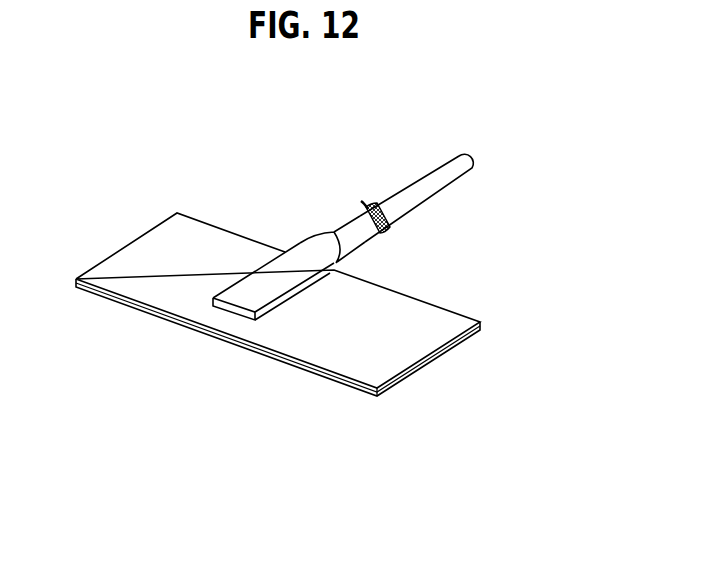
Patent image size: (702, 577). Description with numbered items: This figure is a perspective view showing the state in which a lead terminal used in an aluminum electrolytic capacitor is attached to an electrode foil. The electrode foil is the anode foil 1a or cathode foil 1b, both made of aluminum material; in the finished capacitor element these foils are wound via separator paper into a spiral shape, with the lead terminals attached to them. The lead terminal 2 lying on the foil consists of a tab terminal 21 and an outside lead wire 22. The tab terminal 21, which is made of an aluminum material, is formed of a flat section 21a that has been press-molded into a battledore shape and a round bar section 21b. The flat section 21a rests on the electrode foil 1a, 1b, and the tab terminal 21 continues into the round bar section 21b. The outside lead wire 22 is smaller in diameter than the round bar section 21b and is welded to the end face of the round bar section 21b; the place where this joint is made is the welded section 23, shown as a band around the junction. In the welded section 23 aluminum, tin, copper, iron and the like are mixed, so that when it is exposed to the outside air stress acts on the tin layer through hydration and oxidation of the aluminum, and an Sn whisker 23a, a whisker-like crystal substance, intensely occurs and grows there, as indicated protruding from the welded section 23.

The anode foil 1a is at (278, 292).
The cathode foil 1b is at (116, 262).
The lead terminal 2 is at (370, 220).
The tab terminal 21 is at (289, 222).
The flat section 21a is at (286, 262).
The round bar section 21b is at (332, 214).
The outside lead wire 22 is at (434, 180).
The welded section 23 is at (384, 230).
The Sn whisker 23a is at (363, 202).